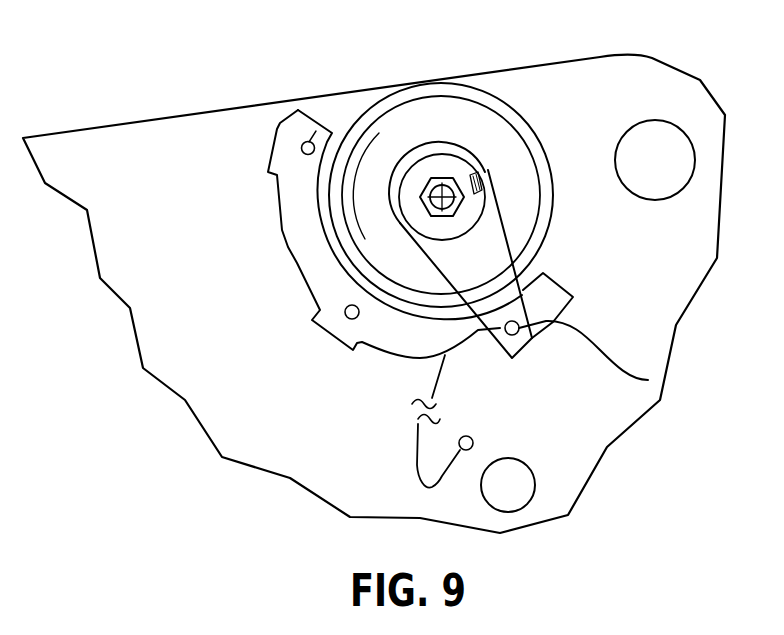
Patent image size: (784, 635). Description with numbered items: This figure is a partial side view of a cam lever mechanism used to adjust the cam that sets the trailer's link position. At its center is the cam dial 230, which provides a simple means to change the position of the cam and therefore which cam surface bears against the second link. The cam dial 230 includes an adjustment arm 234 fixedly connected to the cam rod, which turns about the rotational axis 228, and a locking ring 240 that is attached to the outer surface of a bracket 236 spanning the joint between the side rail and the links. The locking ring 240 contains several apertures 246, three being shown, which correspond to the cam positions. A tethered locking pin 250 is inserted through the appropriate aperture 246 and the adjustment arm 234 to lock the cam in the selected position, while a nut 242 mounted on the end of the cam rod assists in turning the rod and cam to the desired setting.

The rotational axis 228 is at (448, 188).
The cam dial 230 is at (350, 220).
The adjustment arm 234 is at (485, 253).
The bracket 236 is at (188, 226).
The locking ring 240 is at (320, 284).
The nut 242 is at (440, 196).
The apertures 246 is at (332, 128).
The tethered locking pin 250 is at (650, 380).